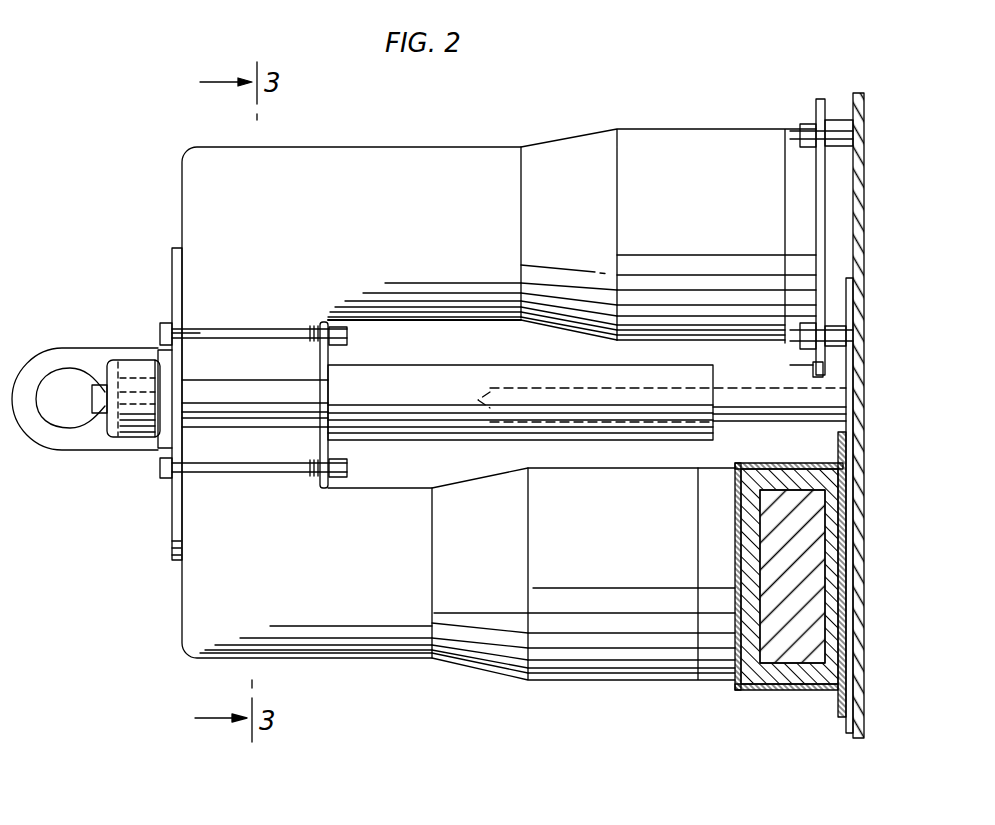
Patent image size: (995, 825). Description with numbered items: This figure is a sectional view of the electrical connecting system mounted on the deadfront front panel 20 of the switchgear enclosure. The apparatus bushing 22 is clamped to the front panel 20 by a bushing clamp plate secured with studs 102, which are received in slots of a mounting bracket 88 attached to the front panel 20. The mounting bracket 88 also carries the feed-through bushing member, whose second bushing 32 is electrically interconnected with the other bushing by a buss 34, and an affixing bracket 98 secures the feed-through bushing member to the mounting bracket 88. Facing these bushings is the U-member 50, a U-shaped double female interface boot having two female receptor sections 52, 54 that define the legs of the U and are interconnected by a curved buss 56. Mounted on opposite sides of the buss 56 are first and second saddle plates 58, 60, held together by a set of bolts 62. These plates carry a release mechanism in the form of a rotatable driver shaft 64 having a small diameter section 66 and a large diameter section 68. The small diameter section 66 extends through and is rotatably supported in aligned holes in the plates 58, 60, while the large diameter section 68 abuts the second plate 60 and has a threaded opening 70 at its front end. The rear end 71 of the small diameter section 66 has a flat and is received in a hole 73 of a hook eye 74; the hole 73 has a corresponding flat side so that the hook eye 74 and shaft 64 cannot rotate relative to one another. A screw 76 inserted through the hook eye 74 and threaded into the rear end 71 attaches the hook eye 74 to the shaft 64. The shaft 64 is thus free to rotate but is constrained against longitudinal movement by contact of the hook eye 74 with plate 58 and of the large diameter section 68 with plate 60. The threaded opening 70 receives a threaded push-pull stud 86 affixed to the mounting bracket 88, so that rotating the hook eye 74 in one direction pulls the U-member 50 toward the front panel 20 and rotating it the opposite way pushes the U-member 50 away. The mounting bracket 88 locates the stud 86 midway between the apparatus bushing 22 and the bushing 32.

The front panel 20 is at (863, 726).
The apparatus bushing 22 is at (795, 133).
The second bushing 32 is at (705, 674).
The buss 34 is at (786, 655).
The U-member 50 is at (205, 660).
The receptor section 52 is at (481, 670).
The receptor section 54 is at (482, 145).
The buss 56 is at (176, 607).
The first saddle plate 58 is at (171, 270).
The second saddle plate 60 is at (330, 357).
The bolts 62 is at (268, 328).
The driver shaft 64 is at (478, 362).
The small diameter section 66 is at (212, 378).
The large diameter section 68 is at (410, 366).
The threaded opening 70 is at (572, 400).
The rear end 71 is at (157, 376).
The hole 73 is at (136, 442).
The hook eye 74 is at (63, 450).
The screw 76 is at (90, 393).
The push-pull stud 86 is at (775, 424).
The mounting bracket 88 is at (812, 366).
The affixing bracket 98 is at (817, 693).
The studs 102 is at (840, 128).